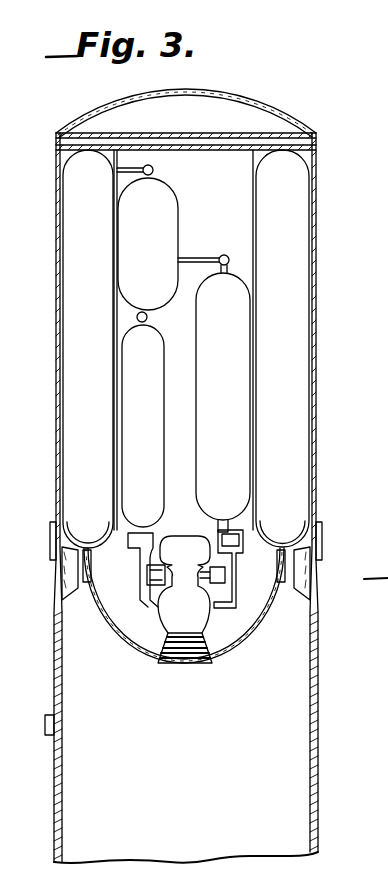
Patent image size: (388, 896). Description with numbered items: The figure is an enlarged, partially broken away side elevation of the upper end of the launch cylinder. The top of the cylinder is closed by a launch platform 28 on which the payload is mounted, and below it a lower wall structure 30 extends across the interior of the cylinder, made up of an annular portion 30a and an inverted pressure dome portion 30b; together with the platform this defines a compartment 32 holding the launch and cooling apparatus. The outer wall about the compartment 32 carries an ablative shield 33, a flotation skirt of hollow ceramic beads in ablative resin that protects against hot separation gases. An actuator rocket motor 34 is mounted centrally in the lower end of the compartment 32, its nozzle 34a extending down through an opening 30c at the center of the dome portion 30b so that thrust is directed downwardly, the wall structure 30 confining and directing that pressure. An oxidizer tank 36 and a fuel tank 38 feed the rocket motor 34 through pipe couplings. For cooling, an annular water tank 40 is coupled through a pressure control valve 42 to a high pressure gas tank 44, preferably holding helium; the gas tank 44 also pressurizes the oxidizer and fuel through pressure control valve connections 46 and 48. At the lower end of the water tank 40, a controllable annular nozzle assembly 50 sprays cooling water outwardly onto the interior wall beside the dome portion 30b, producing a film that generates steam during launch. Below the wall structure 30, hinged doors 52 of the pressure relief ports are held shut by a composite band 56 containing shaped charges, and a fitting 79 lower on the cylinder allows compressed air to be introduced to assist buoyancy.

The launch platform 28 is at (284, 104).
The lower wall structure 30 is at (275, 609).
The annular portion 30a is at (283, 553).
The inverted pressure dome portion 30b is at (127, 643).
The opening 30c is at (205, 668).
The compartment 32 is at (220, 225).
The ablative shield 33 is at (318, 335).
The actuator rocket motor 34 is at (161, 612).
The nozzle 34a is at (215, 645).
The oxidizer tank 36 is at (231, 426).
The fuel tank 38 is at (154, 441).
The annular water tank 40 is at (292, 373).
The pressure control valve 42 is at (153, 170).
The high pressure gas tank 44 is at (154, 251).
The pressure control valve connection 46 is at (224, 254).
The pressure control valve connection 48 is at (147, 317).
The controllable annular nozzle assembly 50 is at (58, 537).
The door 52 is at (56, 580).
The composite band 56 is at (322, 552).
The fitting 79 is at (44, 722).